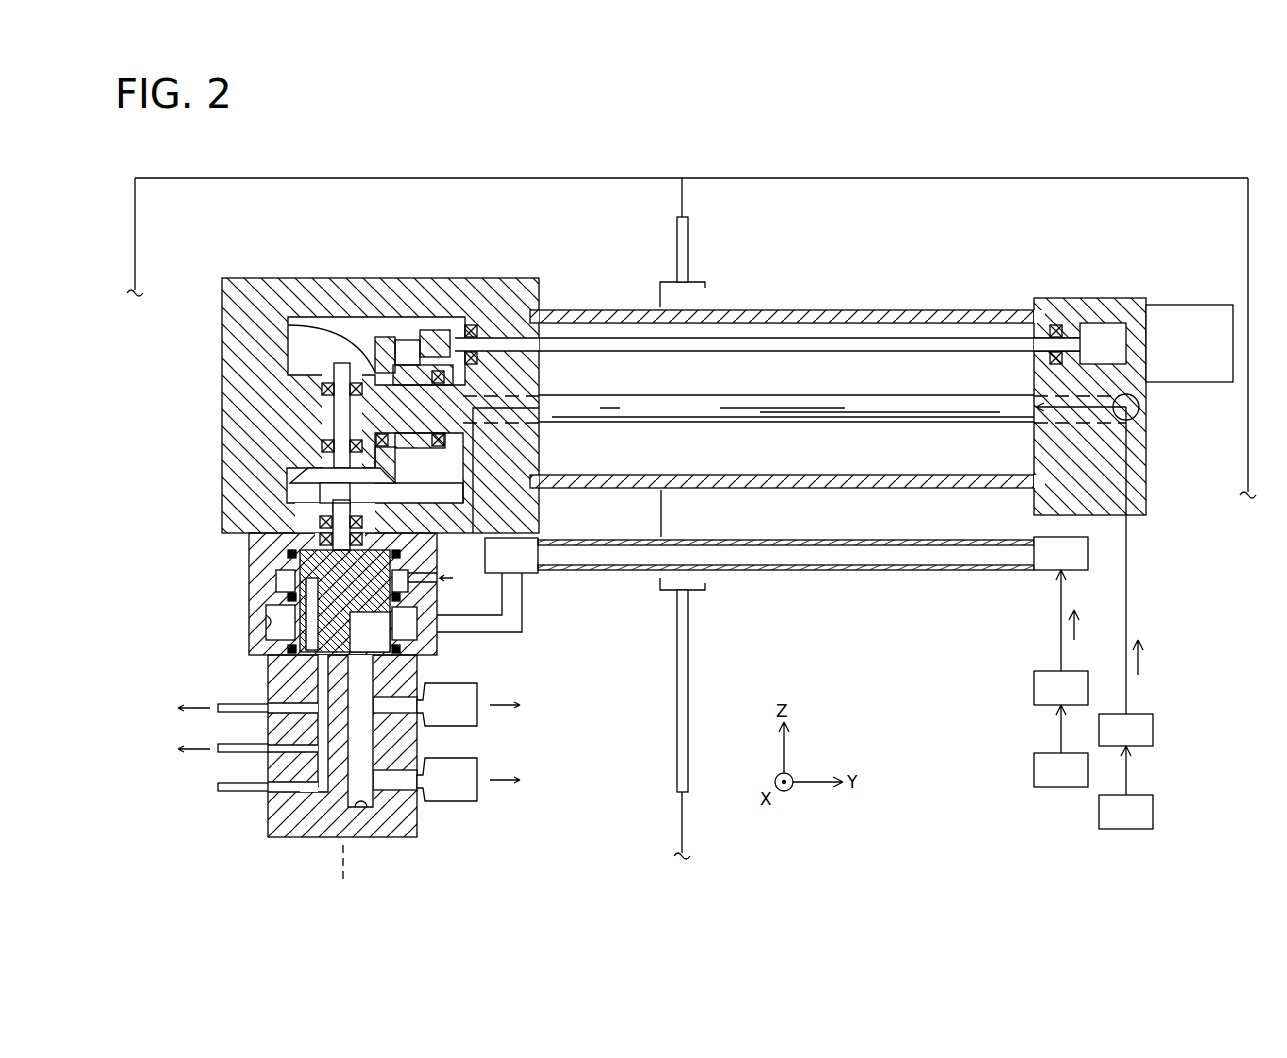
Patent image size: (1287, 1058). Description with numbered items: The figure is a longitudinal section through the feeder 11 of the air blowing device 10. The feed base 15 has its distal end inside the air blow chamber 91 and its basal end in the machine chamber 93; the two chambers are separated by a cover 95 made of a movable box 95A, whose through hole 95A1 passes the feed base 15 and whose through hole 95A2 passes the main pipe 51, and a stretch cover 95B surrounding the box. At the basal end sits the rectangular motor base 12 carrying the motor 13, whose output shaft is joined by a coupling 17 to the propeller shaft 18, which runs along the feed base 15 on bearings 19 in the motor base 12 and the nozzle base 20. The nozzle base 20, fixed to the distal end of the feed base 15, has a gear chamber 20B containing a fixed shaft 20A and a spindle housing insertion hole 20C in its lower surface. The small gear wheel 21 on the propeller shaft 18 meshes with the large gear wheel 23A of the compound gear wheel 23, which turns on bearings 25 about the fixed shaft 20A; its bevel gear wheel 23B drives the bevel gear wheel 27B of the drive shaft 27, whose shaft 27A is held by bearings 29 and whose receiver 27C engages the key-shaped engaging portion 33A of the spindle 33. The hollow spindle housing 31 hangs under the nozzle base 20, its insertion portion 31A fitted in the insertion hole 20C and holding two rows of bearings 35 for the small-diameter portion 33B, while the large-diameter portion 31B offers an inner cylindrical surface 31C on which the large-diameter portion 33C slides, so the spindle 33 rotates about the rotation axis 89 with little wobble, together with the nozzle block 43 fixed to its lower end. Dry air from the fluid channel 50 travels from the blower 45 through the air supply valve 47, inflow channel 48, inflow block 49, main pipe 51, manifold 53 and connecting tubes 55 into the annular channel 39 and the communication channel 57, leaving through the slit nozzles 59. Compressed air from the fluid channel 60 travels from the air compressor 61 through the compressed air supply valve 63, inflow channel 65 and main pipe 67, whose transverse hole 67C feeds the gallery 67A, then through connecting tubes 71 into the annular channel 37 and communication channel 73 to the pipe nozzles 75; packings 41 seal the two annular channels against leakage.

The air blowing device 10 is at (1250, 158).
The feeder 11 is at (984, 278).
The motor base 12 is at (1118, 295).
The motor 13 is at (1192, 302).
The feed base 15 is at (908, 310).
The coupling 17 is at (1100, 320).
The propeller shaft 18 is at (738, 336).
The bearings 19 is at (472, 324).
The nozzle base 20 is at (529, 278).
The fixed shaft 20A is at (452, 347).
The gear chamber 20B is at (288, 319).
The spindle housing insertion hole 20C is at (395, 484).
The small gear wheel 21 is at (422, 332).
The compound gear wheel 23 is at (379, 283).
The large gear wheel 23A is at (420, 327).
The bevel gear wheel 23B is at (372, 332).
The bearings 25 is at (296, 322).
The drive shaft 27 is at (281, 471).
The shaft 27A is at (340, 476).
The bevel gear wheel 27B is at (375, 461).
The receiver 27C is at (365, 482).
The bearings 29 is at (288, 345).
The spindle housing 31 is at (527, 644).
The insertion portion 31A is at (522, 580).
The large-diameter portion 31B is at (438, 645).
The inner cylindrical surface 31C is at (438, 670).
The spindle 33 is at (297, 586).
The engaging portion 33A is at (300, 567).
The small-diameter portion 33B is at (290, 580).
The large-diameter portion 33C is at (285, 591).
The bearings 35 is at (288, 552).
The annular channel 37 is at (270, 603).
The annular channel 39 is at (270, 632).
The packings 41 is at (408, 602).
The nozzle block 43 is at (268, 673).
The blower 45 is at (1027, 769).
The air supply valve 47 is at (1027, 689).
The inflow channel 48 is at (1052, 630).
The inflow block 49 is at (1034, 578).
The fluid channel 50 is at (752, 584).
The main pipe 51 is at (850, 572).
The manifold 53 is at (536, 538).
The connecting tubes 55 is at (526, 582).
The communication channel 57 is at (371, 807).
The slit nozzles 59 is at (478, 801).
The fluid channel 60 is at (1176, 634).
The air compressor 61 is at (1154, 812).
The compressed air supply valve 63 is at (1154, 732).
The inflow channel 65 is at (1126, 574).
The main pipe 67 is at (848, 428).
The gallery 67A is at (862, 394).
The transverse hole 67C is at (1134, 414).
The connecting tubes 71 is at (526, 450).
The communication channel 73 is at (320, 784).
The pipe nozzles 75 is at (232, 792).
The rotation axis 89 is at (340, 858).
The air blow chamber 91 is at (529, 176).
The machine chamber 93 is at (825, 176).
The cover 95 is at (671, 531).
The movable box 95A is at (662, 282).
The through hole 95A1 is at (665, 502).
The through hole 95A2 is at (658, 537).
The stretch cover 95B is at (676, 248).